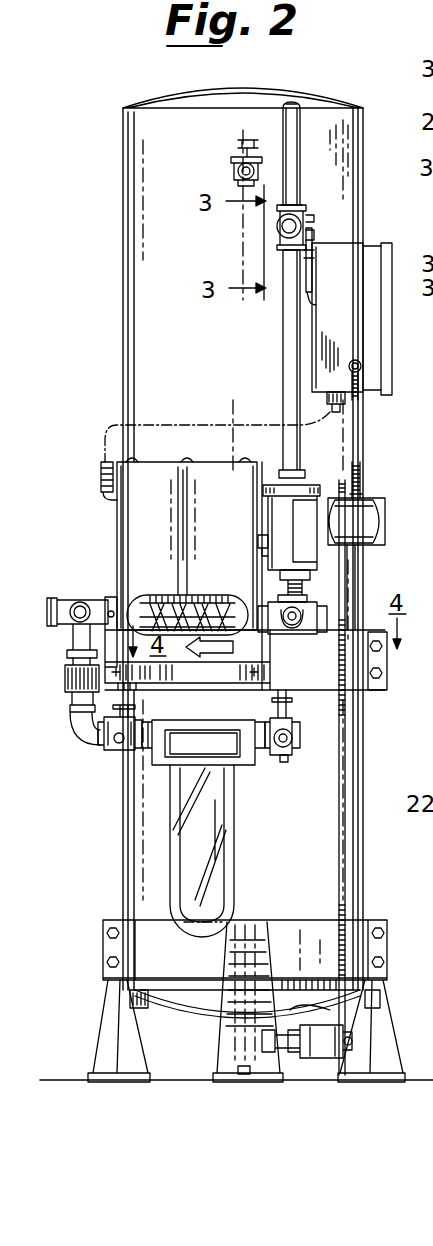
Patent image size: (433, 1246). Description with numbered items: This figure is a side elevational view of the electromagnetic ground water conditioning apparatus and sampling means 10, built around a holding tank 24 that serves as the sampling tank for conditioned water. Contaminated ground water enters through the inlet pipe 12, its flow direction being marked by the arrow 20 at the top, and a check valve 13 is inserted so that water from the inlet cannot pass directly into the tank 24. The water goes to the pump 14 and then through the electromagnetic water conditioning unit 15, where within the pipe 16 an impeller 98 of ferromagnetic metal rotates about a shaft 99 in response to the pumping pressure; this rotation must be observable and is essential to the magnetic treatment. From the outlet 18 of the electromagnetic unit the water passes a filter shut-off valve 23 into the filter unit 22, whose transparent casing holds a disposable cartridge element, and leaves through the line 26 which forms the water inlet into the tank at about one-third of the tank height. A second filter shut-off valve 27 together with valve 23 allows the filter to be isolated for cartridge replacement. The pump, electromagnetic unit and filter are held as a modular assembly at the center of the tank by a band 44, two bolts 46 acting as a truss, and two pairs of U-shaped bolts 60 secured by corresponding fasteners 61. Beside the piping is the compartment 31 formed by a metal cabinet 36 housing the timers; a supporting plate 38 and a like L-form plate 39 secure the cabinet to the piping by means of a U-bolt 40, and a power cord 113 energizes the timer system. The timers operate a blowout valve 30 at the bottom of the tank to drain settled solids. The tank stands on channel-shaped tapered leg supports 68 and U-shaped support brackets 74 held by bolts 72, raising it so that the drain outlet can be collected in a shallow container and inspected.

The electromagnetic ground water conditioning apparatus and sampling means 10 is at (114, 138).
The inlet pipe 12 is at (296, 138).
The check valve 13 is at (300, 195).
The pump 14 is at (268, 508).
The electromagnetic water conditioning unit 15 is at (144, 527).
The pipe 16 is at (218, 612).
The outlet 18 is at (98, 600).
The arrow 20 is at (290, 150).
The filter unit 22 is at (227, 818).
The filter shut-off valve 23 is at (123, 748).
The holding tank 24 is at (222, 343).
The line 26 is at (284, 760).
The filter shut-off valve 27 is at (290, 712).
The blowout valve 30 is at (312, 1060).
The compartment 31 is at (387, 232).
The metal cabinet 36 is at (346, 253).
The supporting plate 38 is at (310, 263).
The plate 39 is at (313, 330).
The U-bolt 40 is at (277, 233).
The band 44 is at (358, 690).
The bolts 46 is at (381, 677).
The U-shaped bolts 60 is at (115, 596).
The fasteners 61 is at (64, 672).
The channel-shaped tapered leg supports 68 is at (100, 990).
The bolts 72 is at (93, 1070).
The U-shaped support brackets 74 is at (134, 992).
The impeller 98 is at (212, 605).
The shaft 99 is at (178, 607).
The power cord 113 is at (264, 545).